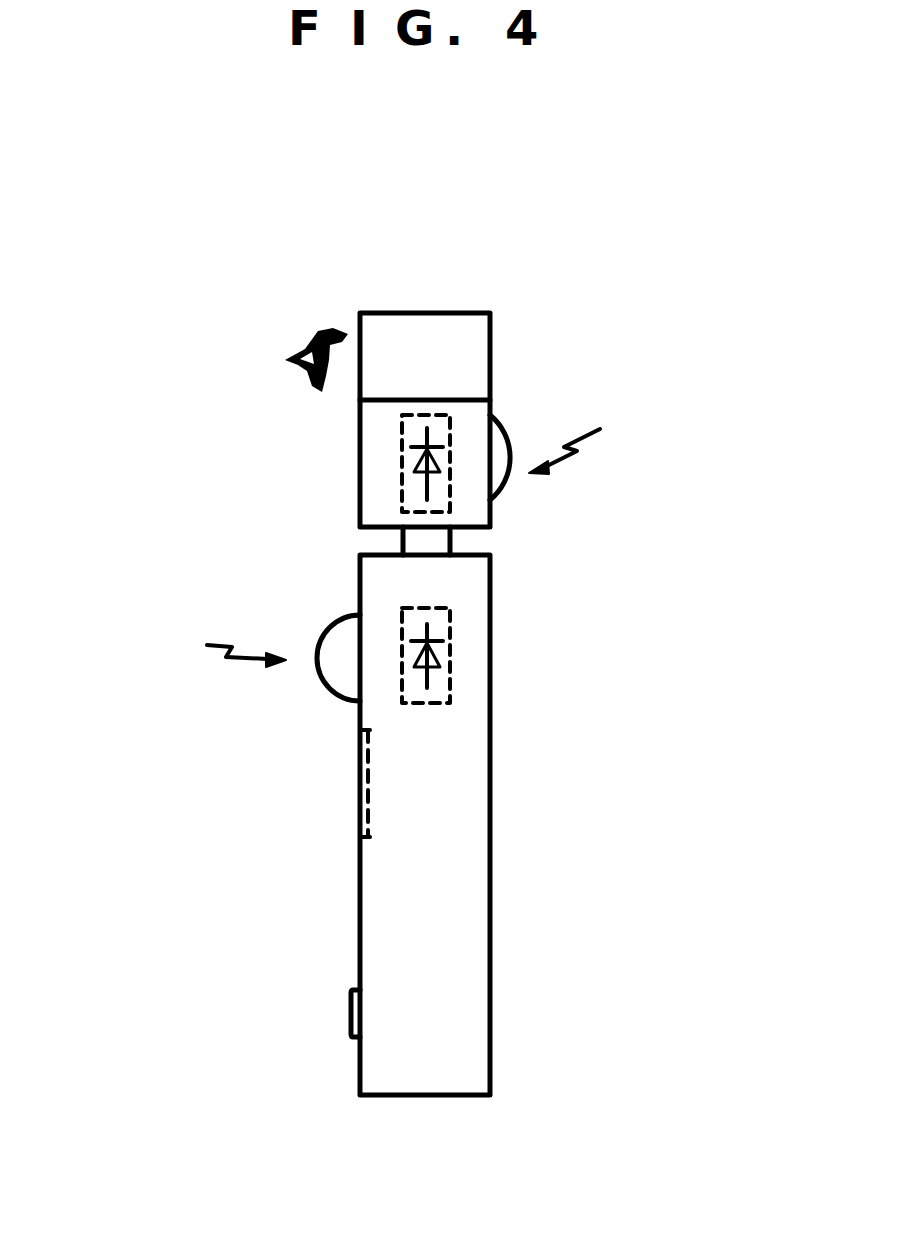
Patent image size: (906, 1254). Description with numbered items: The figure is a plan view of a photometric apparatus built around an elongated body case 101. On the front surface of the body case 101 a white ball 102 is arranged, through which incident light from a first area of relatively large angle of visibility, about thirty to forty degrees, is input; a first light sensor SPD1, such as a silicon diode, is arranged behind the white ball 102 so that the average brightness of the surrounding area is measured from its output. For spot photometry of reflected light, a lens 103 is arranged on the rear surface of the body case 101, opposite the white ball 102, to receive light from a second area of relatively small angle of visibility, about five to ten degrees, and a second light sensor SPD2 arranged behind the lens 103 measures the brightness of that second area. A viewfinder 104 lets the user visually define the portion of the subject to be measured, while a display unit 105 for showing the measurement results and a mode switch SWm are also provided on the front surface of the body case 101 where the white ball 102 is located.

The body case 101 is at (490, 890).
The white ball 102 is at (330, 690).
The lens 103 is at (497, 492).
The viewfinder 104 is at (490, 363).
The display unit 105 is at (360, 776).
The first light sensor SPD1 is at (440, 655).
The second light sensor SPD2 is at (418, 463).
The mode switch SWm is at (350, 1022).